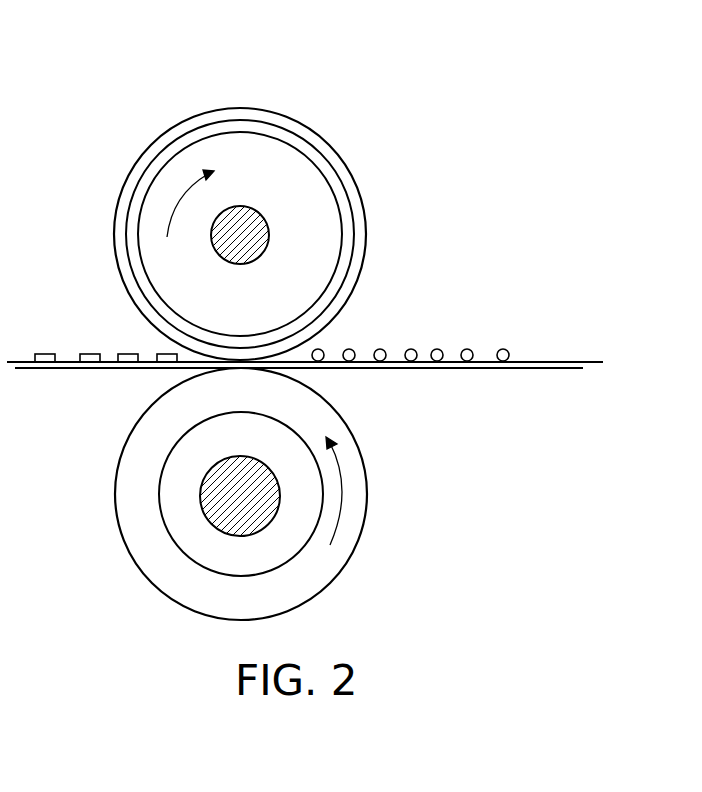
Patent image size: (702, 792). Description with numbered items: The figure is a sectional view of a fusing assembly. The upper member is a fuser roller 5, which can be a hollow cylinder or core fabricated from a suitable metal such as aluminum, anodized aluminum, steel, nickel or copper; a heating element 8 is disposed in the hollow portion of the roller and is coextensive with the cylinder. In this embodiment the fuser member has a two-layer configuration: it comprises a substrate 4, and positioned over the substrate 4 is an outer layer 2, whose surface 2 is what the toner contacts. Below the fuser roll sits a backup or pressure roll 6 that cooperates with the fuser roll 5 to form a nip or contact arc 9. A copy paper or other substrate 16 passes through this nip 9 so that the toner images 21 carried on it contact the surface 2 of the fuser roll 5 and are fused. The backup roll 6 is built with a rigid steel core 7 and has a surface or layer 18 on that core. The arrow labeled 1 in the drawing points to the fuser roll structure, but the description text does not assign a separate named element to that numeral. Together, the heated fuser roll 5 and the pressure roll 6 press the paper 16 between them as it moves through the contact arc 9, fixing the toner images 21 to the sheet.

The fuser roller 5 is at (130, 72).
The image forming roller 1 is at (116, 176).
The outer layer 2 is at (165, 142).
The substrate 4 is at (255, 130).
The heating element 8 is at (243, 208).
The substrate 16 is at (483, 369).
The nip 9 is at (196, 371).
The toner images 21 is at (507, 353).
The backup roll 6 is at (120, 586).
The surface layer 18 is at (310, 575).
The rigid steel core 7 is at (238, 458).